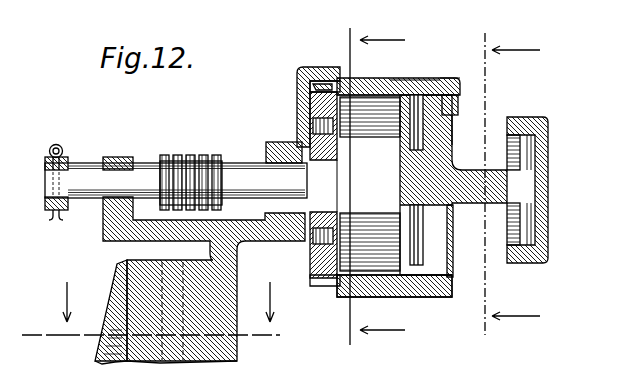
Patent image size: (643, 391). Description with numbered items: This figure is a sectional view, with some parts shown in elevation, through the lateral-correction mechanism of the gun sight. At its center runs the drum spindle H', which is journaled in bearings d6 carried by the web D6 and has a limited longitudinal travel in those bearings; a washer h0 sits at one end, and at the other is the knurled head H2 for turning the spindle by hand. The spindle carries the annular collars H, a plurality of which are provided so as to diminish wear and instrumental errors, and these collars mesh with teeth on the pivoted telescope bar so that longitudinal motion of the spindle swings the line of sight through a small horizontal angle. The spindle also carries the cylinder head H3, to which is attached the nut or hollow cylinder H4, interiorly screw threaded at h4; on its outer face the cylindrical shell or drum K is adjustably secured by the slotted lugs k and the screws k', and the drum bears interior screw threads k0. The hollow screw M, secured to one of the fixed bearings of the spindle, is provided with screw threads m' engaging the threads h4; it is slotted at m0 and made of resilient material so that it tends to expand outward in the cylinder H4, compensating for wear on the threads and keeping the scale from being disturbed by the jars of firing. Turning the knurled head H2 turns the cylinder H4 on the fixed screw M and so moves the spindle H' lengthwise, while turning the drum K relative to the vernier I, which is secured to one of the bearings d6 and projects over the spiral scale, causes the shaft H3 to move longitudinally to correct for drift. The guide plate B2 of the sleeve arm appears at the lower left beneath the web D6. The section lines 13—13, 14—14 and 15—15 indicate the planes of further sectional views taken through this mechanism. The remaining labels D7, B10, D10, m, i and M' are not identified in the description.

The section line 13— 13 is at (505, 32).
The section line 14— 14 is at (372, 28).
The section line 15— 15 is at (164, 313).
The shaft D7 is at (316, 167).
The drum spindle H' is at (73, 168).
The washer h0 is at (50, 158).
The bearings d6 is at (119, 162).
The annular collars H is at (191, 169).
The web D6 is at (238, 330).
The guide plate B2 is at (135, 311).
The bracket base B10 is at (150, 352).
The block base D10 is at (222, 352).
The vernier I is at (318, 67).
The screw threads m' is at (317, 193).
The hollow screw M is at (321, 199).
The collar wall m is at (333, 199).
The interior screw threads k0 is at (376, 79).
The plate joint i is at (404, 80).
The cylindrical shell K is at (381, 65).
The slot m0 is at (412, 84).
The cylinder head H3 is at (450, 160).
The screw threads h4 is at (432, 290).
The lower plate M' is at (394, 306).
The screws k' is at (476, 102).
The hollow cylinder H4 is at (462, 80).
The slotted lugs k is at (462, 196).
The knurled head H2 is at (548, 120).